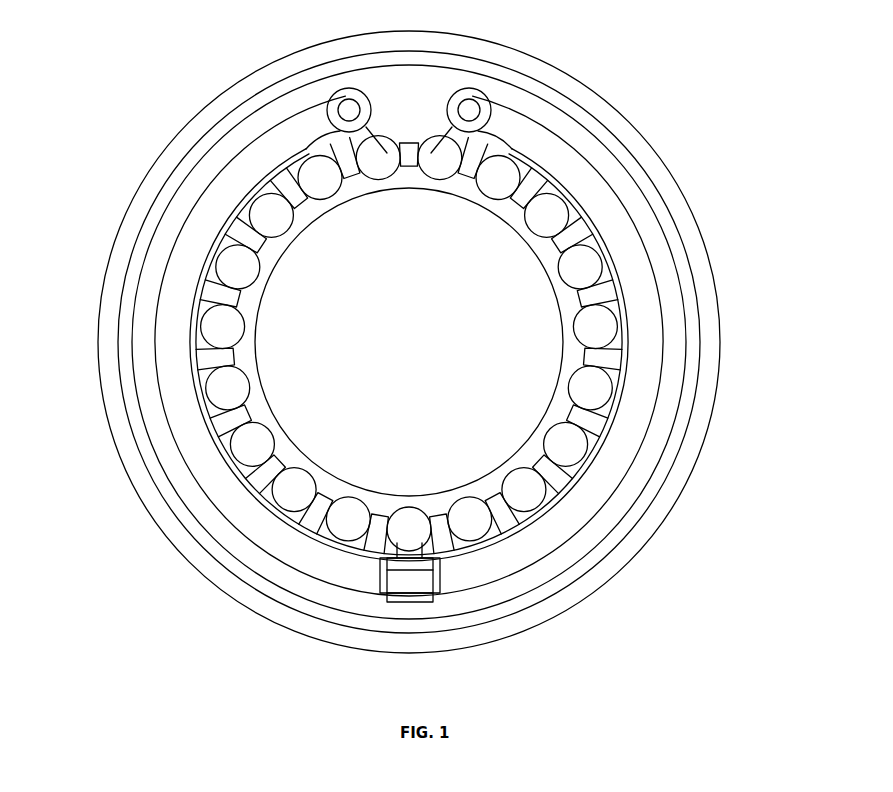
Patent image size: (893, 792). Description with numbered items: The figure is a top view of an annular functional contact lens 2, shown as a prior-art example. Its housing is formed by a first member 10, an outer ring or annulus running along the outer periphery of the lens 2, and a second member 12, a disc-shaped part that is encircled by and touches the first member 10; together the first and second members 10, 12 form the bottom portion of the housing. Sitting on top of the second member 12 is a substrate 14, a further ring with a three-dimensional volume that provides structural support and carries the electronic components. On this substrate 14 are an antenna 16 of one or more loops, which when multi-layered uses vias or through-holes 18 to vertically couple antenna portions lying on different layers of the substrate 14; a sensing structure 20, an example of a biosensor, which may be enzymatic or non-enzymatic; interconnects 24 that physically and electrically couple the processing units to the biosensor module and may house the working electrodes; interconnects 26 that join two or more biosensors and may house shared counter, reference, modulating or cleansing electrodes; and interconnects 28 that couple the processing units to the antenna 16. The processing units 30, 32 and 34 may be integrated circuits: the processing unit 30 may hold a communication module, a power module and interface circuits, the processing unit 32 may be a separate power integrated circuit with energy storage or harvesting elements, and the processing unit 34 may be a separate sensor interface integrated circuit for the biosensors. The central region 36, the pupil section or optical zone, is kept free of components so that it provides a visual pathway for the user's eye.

The functional contact lens 2 is at (150, 46).
The first member 10 is at (510, 66).
The second member 12 is at (565, 101).
The substrate 14 is at (613, 165).
The antenna 16 is at (640, 256).
The vias or through-holes 18 is at (349, 110).
The sensing structure 20 is at (271, 210).
The interconnect 24 is at (207, 250).
The interconnect 26 is at (223, 349).
The interconnect 28 is at (380, 590).
The processing unit 30 is at (413, 578).
The processing unit 32 is at (413, 597).
The processing unit 34 is at (420, 563).
The region 36 is at (525, 367).